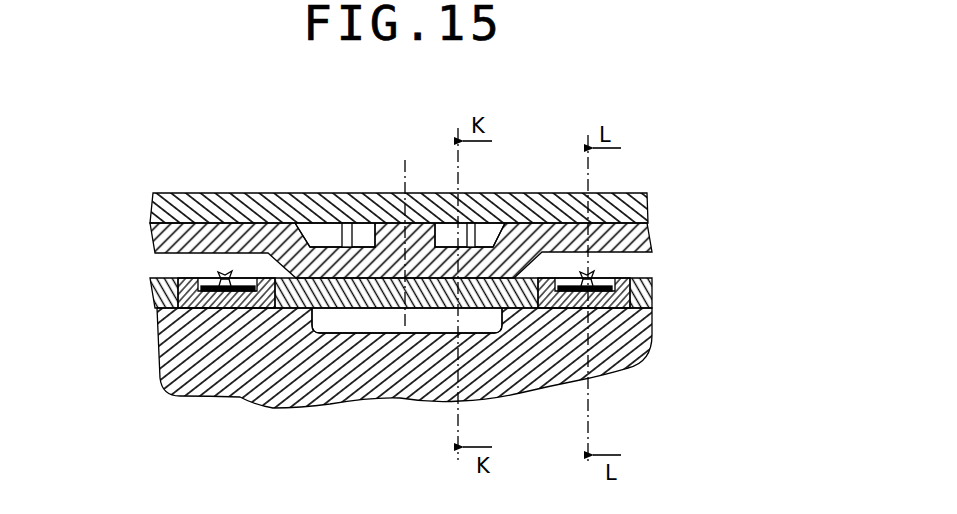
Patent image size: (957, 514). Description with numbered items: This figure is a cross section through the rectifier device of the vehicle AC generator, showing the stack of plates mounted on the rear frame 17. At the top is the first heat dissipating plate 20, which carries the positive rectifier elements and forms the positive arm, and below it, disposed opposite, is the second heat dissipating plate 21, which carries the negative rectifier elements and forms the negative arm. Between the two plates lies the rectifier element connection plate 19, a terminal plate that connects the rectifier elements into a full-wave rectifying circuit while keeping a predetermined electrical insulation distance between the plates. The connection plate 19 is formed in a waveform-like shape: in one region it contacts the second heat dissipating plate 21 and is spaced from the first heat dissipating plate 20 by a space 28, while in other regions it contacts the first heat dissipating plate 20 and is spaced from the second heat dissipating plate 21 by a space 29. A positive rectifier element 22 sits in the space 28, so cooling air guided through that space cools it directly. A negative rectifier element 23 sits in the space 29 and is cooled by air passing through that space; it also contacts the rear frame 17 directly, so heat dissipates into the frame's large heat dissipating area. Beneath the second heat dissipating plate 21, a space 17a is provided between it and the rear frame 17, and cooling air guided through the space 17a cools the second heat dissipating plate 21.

The rear frame 17 is at (485, 377).
The space 17a is at (394, 400).
The rectifier element connection plate 19 is at (462, 250).
The first heat dissipating plate 20 is at (456, 188).
The second heat dissipating plate 21 is at (457, 312).
The positive rectifier element 22 is at (438, 168).
The negative rectifier element 23 is at (410, 348).
The space 28 is at (434, 160).
The space 29 is at (403, 249).